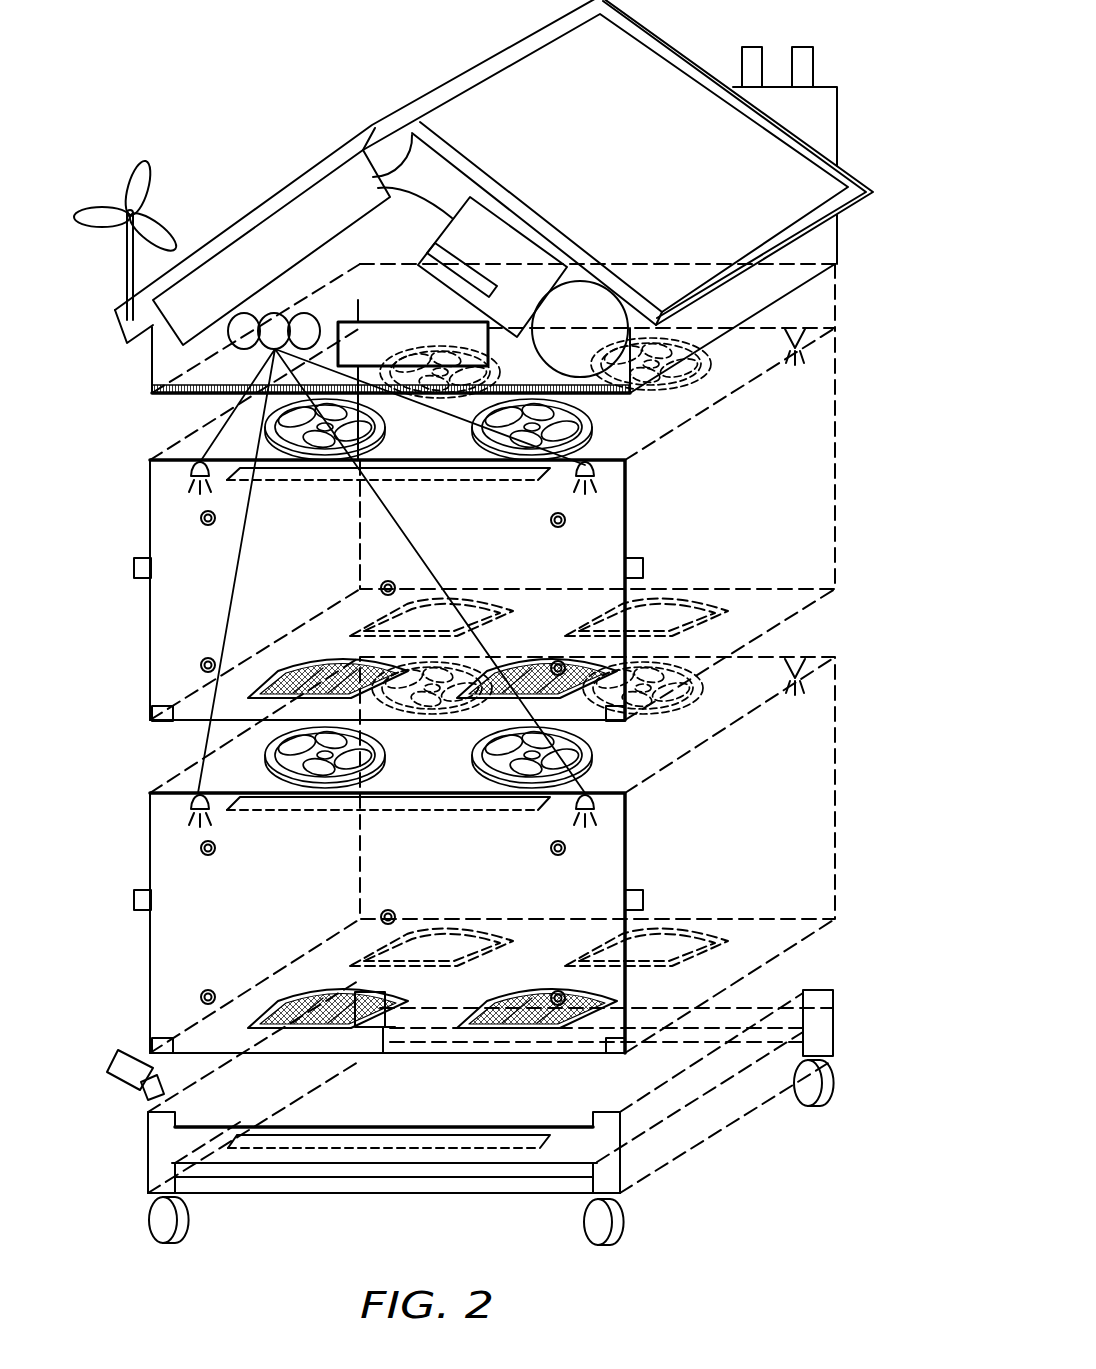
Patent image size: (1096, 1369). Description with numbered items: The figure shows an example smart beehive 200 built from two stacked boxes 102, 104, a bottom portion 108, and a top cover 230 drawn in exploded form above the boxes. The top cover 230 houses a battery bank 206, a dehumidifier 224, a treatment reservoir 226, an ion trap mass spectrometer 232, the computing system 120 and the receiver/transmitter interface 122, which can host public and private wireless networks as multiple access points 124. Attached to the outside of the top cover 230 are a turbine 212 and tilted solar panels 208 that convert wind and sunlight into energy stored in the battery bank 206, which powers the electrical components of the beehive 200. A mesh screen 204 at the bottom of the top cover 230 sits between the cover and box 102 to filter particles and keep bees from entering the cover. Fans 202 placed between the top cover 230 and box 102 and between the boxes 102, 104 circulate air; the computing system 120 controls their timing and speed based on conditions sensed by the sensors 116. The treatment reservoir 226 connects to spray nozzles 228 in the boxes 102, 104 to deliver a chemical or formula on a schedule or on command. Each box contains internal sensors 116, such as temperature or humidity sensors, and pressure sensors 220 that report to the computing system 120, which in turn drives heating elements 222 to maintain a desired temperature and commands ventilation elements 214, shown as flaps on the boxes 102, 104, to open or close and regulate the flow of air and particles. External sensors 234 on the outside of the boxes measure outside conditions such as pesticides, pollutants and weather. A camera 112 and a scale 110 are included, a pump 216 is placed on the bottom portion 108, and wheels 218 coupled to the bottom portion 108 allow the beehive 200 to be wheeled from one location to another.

The beehive 200 is at (378, 82).
The box 102 is at (837, 440).
The box 104 is at (837, 777).
The bottom portion 108 is at (148, 1146).
The scale 110 is at (351, 1177).
The camera 112 is at (108, 1083).
The sensors 116 is at (202, 515).
The computing system 120 is at (486, 228).
The receiver/transmitter interface 122 is at (496, 282).
The access points 124 is at (806, 46).
The fans 202 is at (388, 430).
The mesh screen 204 is at (152, 393).
The battery bank 206 is at (318, 195).
The solar panels 208 is at (242, 226).
The turbine 212 is at (130, 176).
The ventilation elements 214 is at (453, 482).
The pump 216 is at (481, 1194).
The wheels 218 is at (190, 1226).
The pressure sensors 220 is at (150, 712).
The heating elements 222 is at (370, 632).
The dehumidifier 224 is at (403, 322).
The treatment reservoir 226 is at (305, 313).
The spray nozzles 228 is at (213, 476).
The top cover 230 is at (152, 358).
The ion trap mass spectrometer 232 is at (594, 298).
The external sensors 234 is at (133, 568).